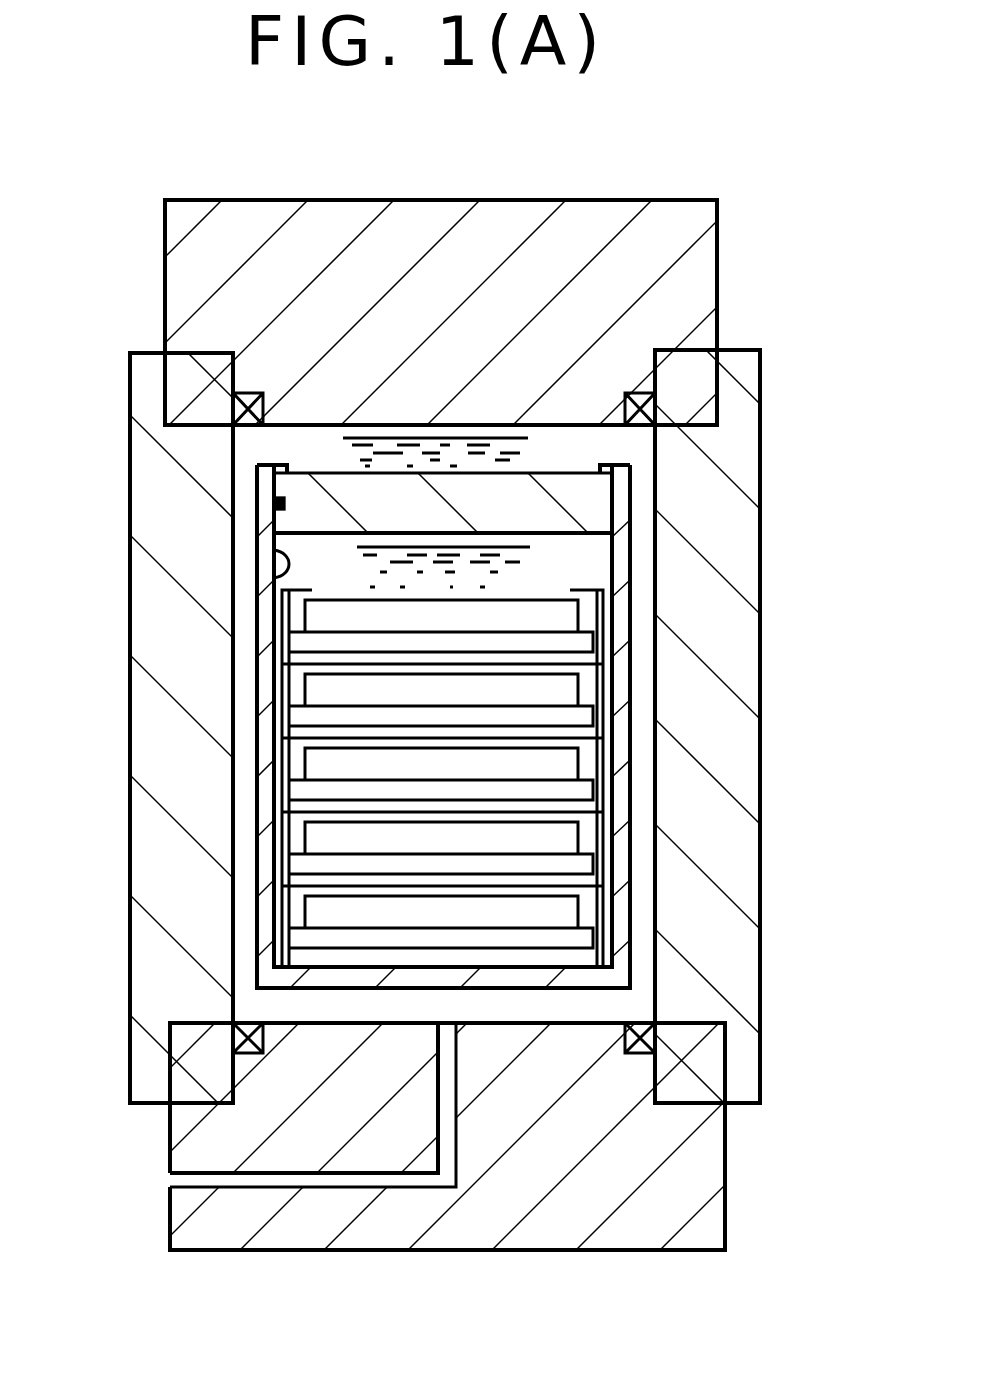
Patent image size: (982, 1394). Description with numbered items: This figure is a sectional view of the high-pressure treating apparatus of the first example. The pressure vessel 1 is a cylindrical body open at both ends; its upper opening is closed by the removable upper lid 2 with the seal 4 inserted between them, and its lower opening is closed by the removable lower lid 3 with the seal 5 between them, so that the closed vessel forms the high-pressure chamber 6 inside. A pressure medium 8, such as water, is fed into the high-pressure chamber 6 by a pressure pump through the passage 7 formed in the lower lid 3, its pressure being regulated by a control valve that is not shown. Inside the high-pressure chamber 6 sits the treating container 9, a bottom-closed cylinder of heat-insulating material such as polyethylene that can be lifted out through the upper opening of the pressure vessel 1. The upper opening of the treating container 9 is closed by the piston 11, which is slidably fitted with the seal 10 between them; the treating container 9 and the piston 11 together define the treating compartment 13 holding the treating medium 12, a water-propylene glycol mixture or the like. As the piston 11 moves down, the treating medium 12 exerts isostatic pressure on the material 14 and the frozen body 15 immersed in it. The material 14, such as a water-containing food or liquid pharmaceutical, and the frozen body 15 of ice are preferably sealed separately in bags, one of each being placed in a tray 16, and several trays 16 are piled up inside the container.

The pressure vessel 1 is at (735, 663).
The upper lid 2 is at (172, 288).
The lower lid 3 is at (308, 1223).
The seal 4 is at (232, 412).
The seal 5 is at (238, 1037).
The high-pressure chamber 6 is at (242, 557).
The passage 7 is at (172, 1180).
The pressure medium 8 is at (488, 438).
The treating container 9 is at (262, 763).
The seal 10 is at (273, 503).
The piston 11 is at (345, 488).
The treating medium 12 is at (522, 547).
The treating compartment 13 is at (277, 578).
The material 14 is at (563, 621).
The frozen body 15 is at (578, 642).
The tray 16 is at (290, 872).